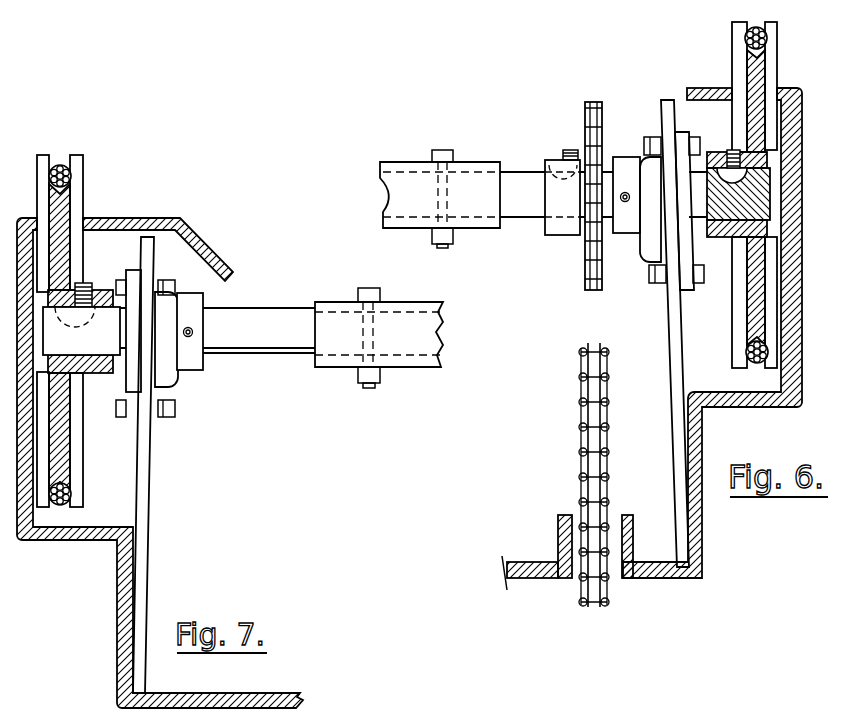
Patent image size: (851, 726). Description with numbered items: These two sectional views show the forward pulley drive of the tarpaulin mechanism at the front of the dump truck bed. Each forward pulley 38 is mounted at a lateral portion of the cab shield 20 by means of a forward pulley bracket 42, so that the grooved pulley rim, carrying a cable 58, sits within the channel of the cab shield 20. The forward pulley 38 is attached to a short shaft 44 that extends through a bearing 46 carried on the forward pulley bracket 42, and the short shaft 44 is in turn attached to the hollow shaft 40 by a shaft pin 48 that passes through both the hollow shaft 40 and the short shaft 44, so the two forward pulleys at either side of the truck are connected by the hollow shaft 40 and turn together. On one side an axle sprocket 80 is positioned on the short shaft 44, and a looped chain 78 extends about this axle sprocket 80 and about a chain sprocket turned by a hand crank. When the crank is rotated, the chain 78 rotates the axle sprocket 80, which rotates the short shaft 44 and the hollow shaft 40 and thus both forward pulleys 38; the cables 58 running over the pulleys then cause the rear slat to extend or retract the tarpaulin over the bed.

In FIG. 7, the cab shield 20 is at (117, 632).
In FIG. 7, the forward pulley 38 is at (84, 190).
In FIG. 6, the forward pulley 38 is at (764, 278).
In FIG. 7, the hollow shaft 40 is at (404, 302).
In FIG. 6, the hollow shaft 40 is at (412, 162).
In FIG. 7, the forward pulley bracket 42 is at (147, 472).
In FIG. 7, the short shaft 44 is at (253, 308).
In FIG. 6, the short shaft 44 is at (515, 220).
In FIG. 7, the bearing 46 is at (178, 383).
In FIG. 6, the bearing 46 is at (659, 107).
In FIG. 7, the shaft pin 48 is at (368, 288).
In FIG. 6, the shaft pin 48 is at (446, 247).
In FIG. 7, the cable 58 is at (59, 505).
In FIG. 6, the cable 58 is at (768, 37).
In FIG. 6, the chain 78 is at (583, 465).
In FIG. 6, the axle sprocket 80 is at (552, 156).